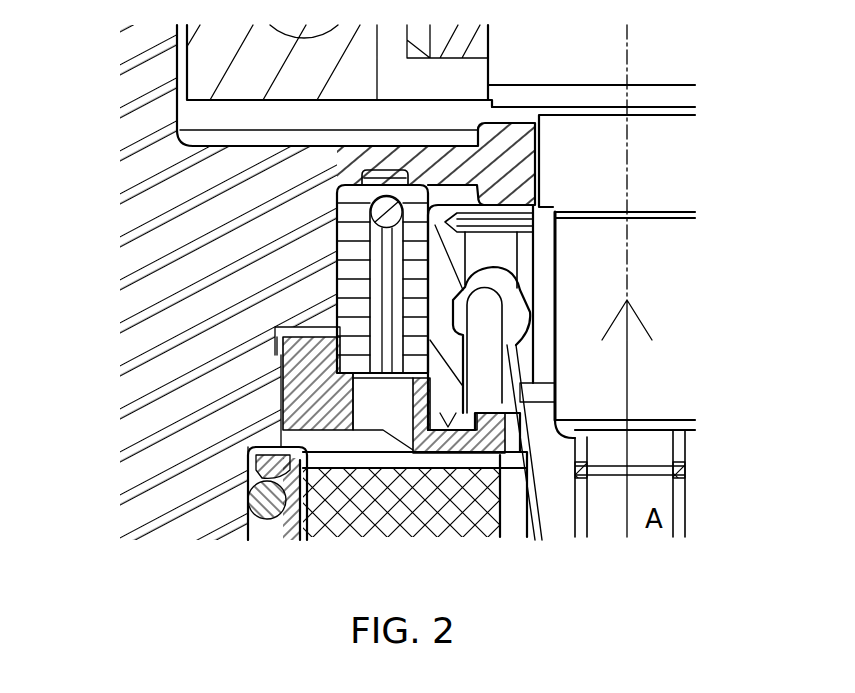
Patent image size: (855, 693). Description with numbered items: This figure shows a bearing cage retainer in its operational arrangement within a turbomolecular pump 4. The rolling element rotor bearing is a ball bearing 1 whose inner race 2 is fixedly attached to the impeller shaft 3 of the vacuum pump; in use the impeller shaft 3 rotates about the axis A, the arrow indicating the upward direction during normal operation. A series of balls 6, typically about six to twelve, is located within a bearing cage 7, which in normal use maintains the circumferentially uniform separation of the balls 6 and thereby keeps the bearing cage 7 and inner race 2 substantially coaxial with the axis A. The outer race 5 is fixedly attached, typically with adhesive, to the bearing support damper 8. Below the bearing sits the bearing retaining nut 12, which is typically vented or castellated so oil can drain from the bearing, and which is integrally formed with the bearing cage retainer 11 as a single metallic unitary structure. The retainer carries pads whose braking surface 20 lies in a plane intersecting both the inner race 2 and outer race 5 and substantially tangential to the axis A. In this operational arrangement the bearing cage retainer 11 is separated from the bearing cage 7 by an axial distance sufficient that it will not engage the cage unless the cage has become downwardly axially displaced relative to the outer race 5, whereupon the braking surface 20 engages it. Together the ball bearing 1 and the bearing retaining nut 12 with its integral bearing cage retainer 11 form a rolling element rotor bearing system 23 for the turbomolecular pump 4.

The ball bearing 1 is at (490, 240).
The inner race 2 is at (543, 252).
The impeller shaft 3 is at (675, 182).
The turbomolecular pump 4 is at (172, 16).
The outer race 5 is at (447, 297).
The balls 6 is at (540, 302).
The bearing cage 7 is at (488, 386).
The bearing support damper 8 is at (350, 250).
The bearing cage retainer 11 is at (496, 452).
The bearing retaining nut 12 is at (290, 376).
The braking surface 20 is at (520, 440).
The rolling element rotor bearing system 23 is at (745, 499).